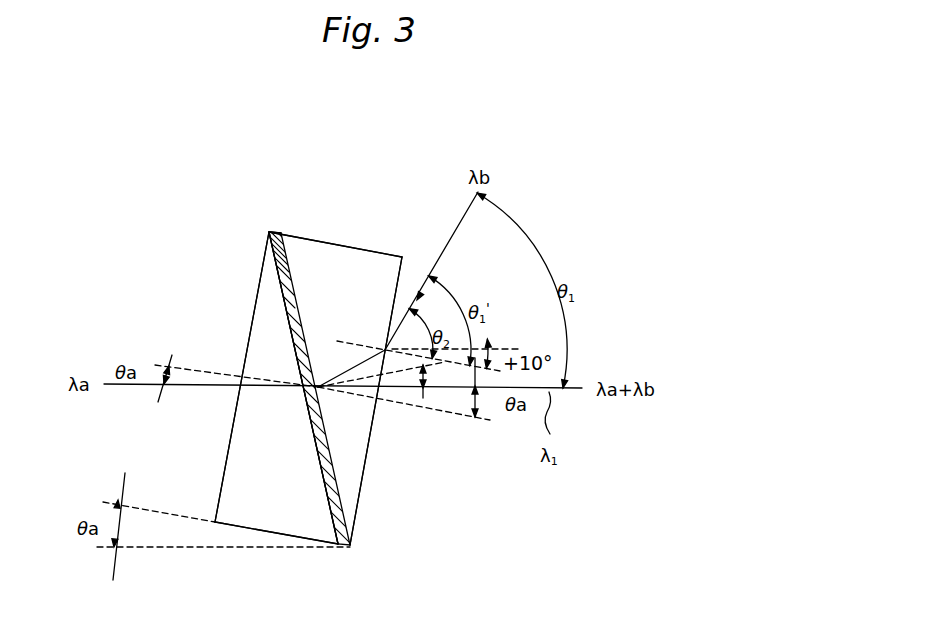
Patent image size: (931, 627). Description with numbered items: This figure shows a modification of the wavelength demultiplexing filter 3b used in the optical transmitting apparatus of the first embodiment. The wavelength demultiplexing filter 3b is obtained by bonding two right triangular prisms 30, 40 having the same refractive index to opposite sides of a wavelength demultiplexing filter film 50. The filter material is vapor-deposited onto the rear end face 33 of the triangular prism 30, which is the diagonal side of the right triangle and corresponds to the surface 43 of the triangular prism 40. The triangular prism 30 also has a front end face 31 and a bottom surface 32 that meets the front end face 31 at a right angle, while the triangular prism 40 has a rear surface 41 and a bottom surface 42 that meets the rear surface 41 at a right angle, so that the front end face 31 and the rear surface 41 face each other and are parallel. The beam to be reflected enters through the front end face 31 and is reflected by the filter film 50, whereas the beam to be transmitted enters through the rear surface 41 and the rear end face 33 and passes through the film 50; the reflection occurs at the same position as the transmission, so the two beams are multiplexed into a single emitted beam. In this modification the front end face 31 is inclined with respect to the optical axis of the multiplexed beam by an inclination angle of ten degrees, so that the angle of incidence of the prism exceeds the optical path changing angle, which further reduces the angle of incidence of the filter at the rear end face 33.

The wavelength demultiplexing filter 3b is at (129, 283).
The triangular prism 30 is at (358, 430).
The front end face 31 is at (402, 276).
The bottom surface 32 is at (361, 266).
The rear end face 33 is at (297, 278).
The triangular prism 40 is at (263, 411).
The rear surface 41 is at (252, 310).
The bottom surface 42 is at (252, 533).
The surface 43 is at (282, 292).
The wavelength demultiplexing filter film 50 is at (269, 232).